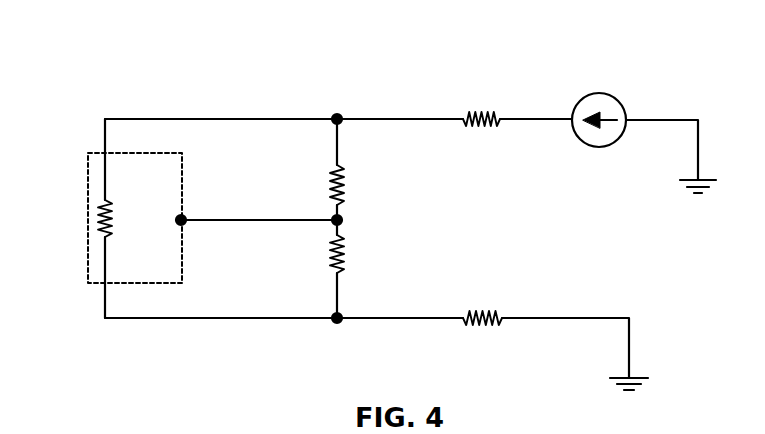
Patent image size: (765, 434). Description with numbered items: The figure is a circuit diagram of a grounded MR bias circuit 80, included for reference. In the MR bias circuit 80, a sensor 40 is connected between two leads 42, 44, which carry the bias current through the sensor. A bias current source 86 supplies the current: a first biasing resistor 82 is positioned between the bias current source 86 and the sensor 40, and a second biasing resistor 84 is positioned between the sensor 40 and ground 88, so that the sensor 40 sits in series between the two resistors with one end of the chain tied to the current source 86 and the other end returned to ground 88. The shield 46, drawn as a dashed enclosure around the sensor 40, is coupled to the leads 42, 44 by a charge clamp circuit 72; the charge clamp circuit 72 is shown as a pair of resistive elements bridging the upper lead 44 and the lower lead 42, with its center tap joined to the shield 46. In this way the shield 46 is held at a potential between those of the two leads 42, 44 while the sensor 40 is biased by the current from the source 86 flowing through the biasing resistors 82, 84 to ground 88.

The grounded MR bias circuit 80 is at (90, 72).
The sensor 40 is at (95, 218).
The lead 44 is at (213, 118).
The lead 42 is at (218, 320).
The shield 46 is at (153, 285).
The charge clamp circuit 72 is at (352, 217).
The biasing resistor 82 is at (468, 115).
The biasing resistor 84 is at (482, 310).
The bias current source 86 is at (618, 102).
The ground 88 is at (632, 348).